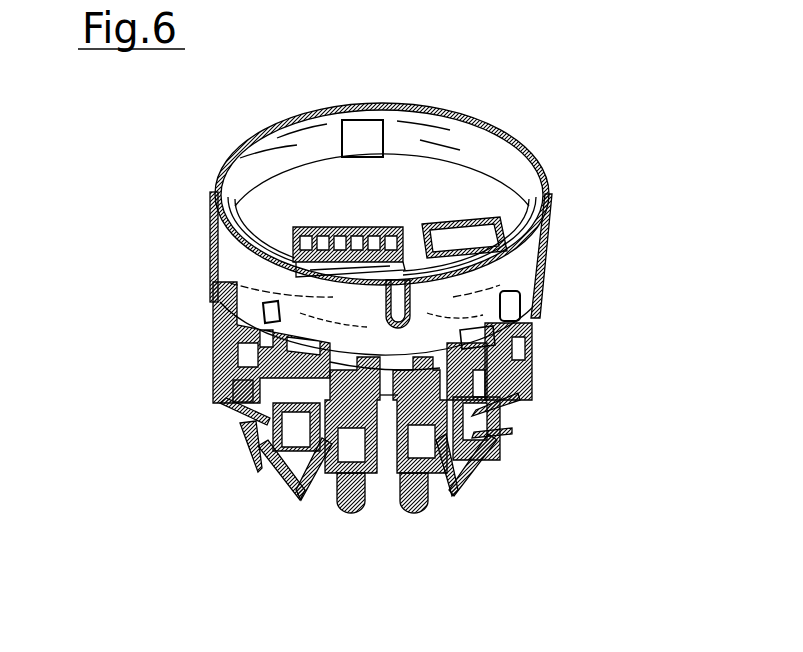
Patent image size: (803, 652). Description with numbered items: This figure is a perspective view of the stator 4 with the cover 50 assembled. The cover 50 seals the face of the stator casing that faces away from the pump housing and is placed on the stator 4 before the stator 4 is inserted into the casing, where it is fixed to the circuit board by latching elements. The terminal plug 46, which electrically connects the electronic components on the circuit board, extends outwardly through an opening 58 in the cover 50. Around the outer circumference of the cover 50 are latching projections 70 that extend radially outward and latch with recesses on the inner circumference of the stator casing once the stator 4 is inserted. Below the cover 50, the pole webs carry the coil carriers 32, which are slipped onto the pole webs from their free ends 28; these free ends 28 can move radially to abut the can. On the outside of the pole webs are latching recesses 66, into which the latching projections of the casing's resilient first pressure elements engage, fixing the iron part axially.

The stator 4 is at (560, 303).
The free ends of the pole webs 28 is at (338, 513).
The coil carrier 32 is at (507, 393).
The terminal plug 46 is at (378, 228).
The cover 50 is at (553, 247).
The opening 58 is at (213, 185).
The latching recesses 66 is at (240, 445).
The latching projections 70 is at (513, 300).